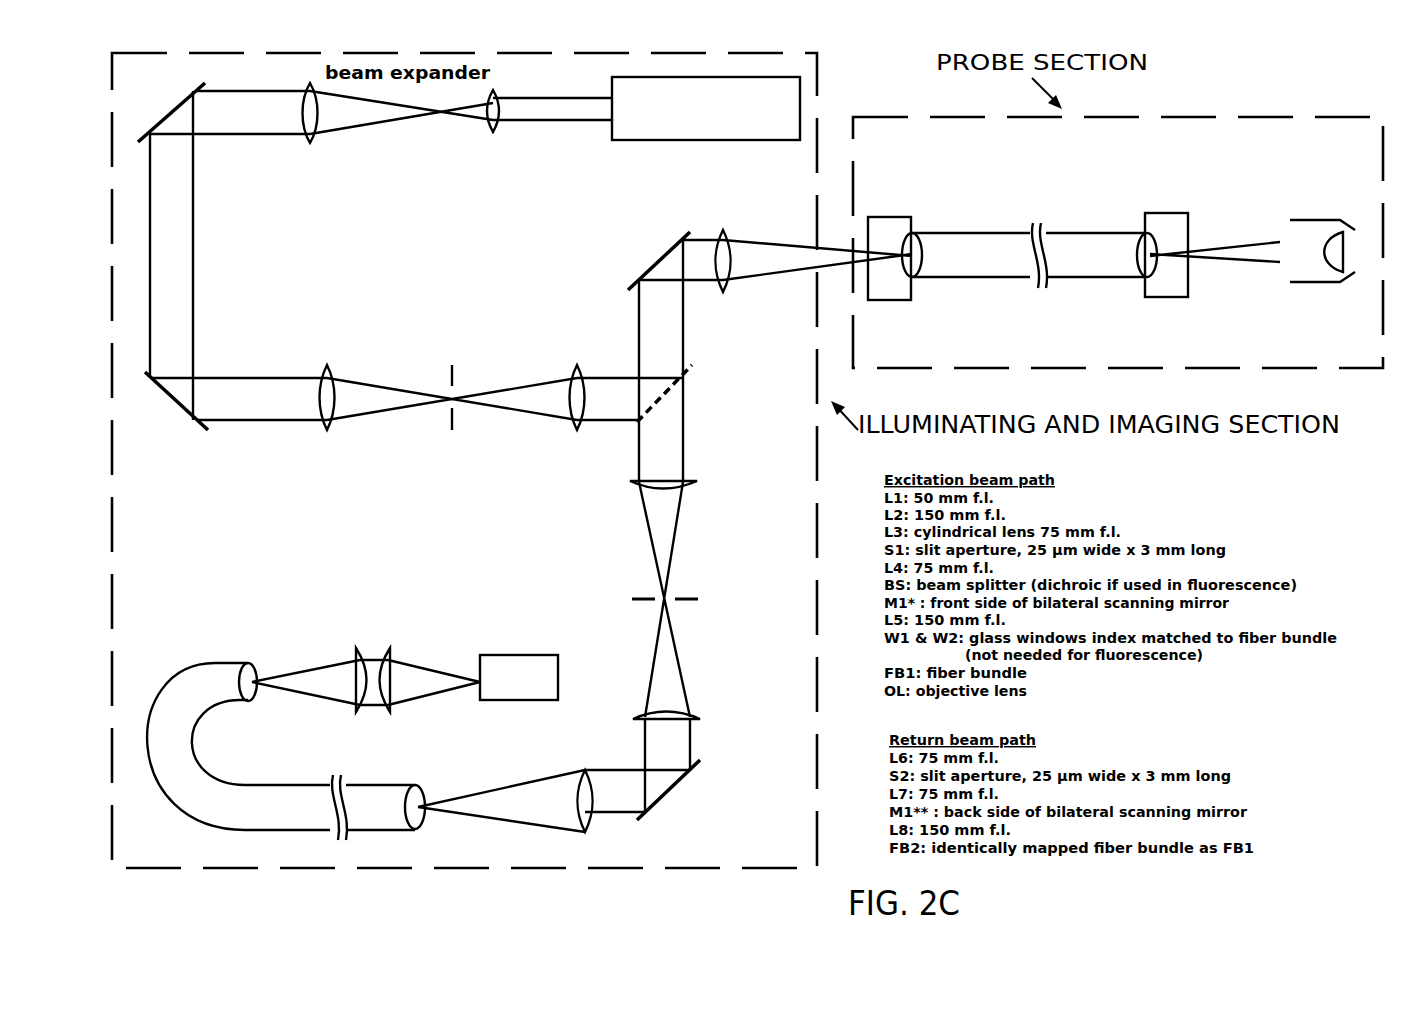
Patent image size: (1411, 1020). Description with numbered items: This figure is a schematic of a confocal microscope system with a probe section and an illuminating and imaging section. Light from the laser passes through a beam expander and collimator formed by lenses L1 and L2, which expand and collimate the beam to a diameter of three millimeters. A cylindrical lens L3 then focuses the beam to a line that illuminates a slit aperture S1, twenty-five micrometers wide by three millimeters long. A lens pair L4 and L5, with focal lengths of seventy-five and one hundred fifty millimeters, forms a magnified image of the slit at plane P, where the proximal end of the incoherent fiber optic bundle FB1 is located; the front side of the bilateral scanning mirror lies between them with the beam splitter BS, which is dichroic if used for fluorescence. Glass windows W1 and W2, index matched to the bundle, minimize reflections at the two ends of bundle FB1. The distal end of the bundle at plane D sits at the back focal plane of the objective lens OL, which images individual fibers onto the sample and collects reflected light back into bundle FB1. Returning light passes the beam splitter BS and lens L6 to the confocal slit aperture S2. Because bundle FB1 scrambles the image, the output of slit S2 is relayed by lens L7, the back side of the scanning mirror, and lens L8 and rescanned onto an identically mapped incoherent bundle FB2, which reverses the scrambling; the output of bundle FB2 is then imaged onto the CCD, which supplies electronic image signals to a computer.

The lens L1 is at (547, 126).
The lens L2 is at (397, 125).
The cylindrical lens L3 is at (440, 437).
The slit aperture S1 is at (453, 410).
The lens L4 is at (624, 410).
The beam splitter BS is at (680, 393).
The lens L5 is at (812, 247).
The glass window W1 is at (889, 275).
The glass window W2 is at (1212, 272).
The incoherent fiber optic bundle FB1 is at (1028, 273).
The objective lens OL is at (1322, 275).
The proximal plane P is at (930, 210).
The distal plane D is at (1124, 208).
The lens L6 is at (681, 595).
The confocal slit aperture S2 is at (683, 601).
The lens L7 is at (683, 761).
The lens L8 is at (507, 817).
The identically mapped fiber bundle FB2 is at (286, 762).
The CCD camera CCD is at (519, 677).
The element laser is at (706, 108).